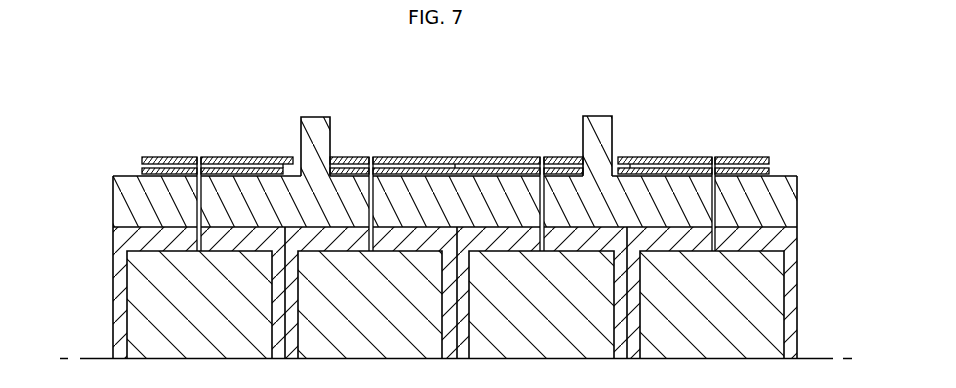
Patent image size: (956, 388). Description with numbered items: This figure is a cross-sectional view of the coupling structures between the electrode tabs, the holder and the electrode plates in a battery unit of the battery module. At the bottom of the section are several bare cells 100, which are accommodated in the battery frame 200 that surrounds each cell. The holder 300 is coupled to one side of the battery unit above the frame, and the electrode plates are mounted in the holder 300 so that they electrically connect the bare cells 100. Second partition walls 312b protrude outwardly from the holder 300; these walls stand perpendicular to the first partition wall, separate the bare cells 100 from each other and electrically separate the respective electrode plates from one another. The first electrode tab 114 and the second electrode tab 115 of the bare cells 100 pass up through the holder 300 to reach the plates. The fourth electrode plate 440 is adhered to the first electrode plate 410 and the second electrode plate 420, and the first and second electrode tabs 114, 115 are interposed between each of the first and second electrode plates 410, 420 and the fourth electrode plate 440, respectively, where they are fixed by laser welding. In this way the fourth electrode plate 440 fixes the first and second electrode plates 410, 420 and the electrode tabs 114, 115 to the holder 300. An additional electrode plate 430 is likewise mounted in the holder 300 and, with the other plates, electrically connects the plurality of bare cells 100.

The bare cell 100 is at (158, 317).
The battery frame 200 is at (122, 263).
The holder 300 is at (120, 198).
The second partition wall 312b is at (315, 122).
The second electrode tab 115 is at (196, 183).
The first electrode tab 114 is at (399, 167).
The second electrode plate 420 is at (142, 172).
The fourth electrode plate 440 is at (244, 157).
The electrode plate 430 is at (468, 157).
The first electrode plate 410 is at (771, 171).